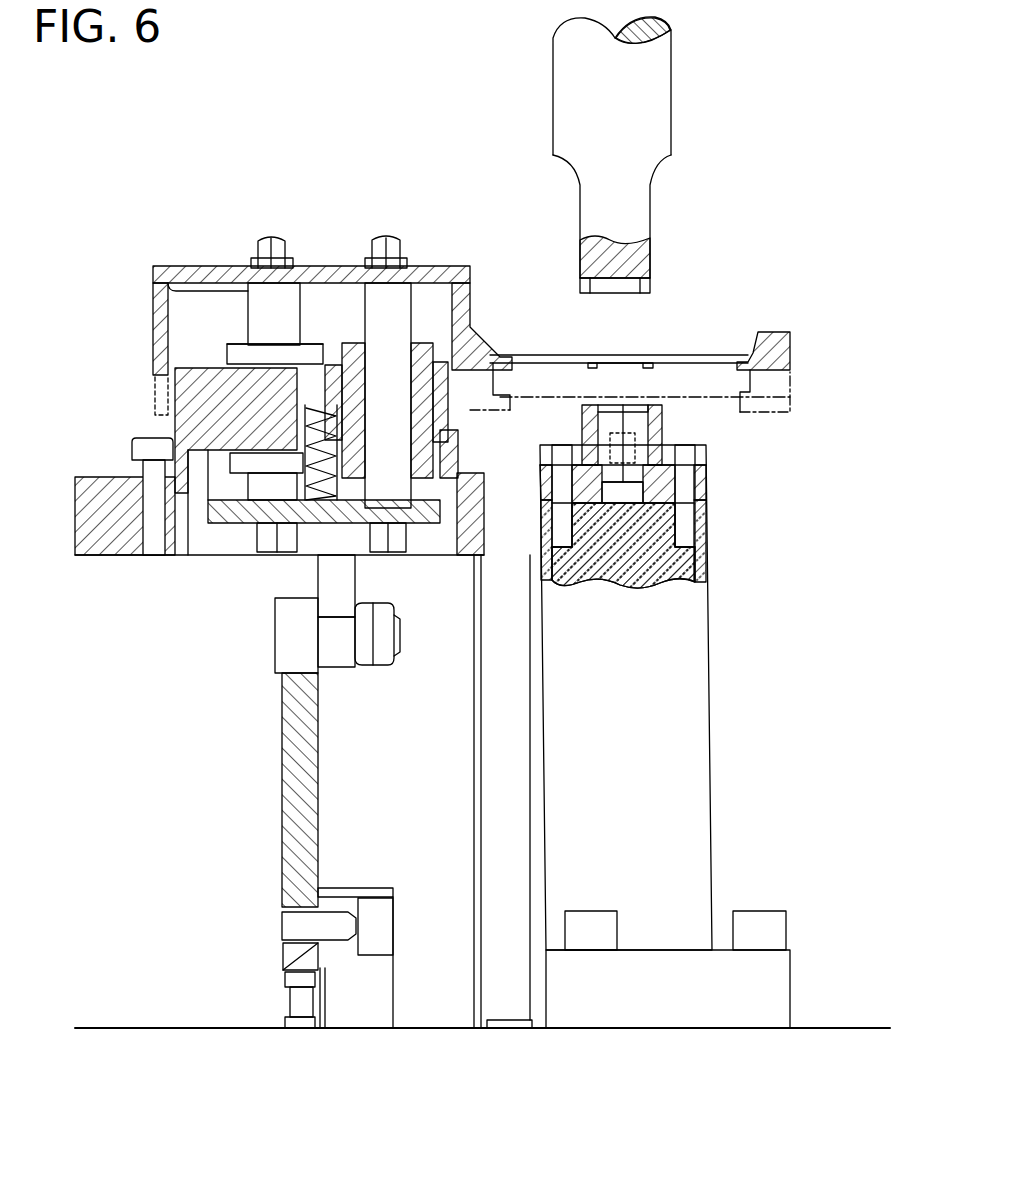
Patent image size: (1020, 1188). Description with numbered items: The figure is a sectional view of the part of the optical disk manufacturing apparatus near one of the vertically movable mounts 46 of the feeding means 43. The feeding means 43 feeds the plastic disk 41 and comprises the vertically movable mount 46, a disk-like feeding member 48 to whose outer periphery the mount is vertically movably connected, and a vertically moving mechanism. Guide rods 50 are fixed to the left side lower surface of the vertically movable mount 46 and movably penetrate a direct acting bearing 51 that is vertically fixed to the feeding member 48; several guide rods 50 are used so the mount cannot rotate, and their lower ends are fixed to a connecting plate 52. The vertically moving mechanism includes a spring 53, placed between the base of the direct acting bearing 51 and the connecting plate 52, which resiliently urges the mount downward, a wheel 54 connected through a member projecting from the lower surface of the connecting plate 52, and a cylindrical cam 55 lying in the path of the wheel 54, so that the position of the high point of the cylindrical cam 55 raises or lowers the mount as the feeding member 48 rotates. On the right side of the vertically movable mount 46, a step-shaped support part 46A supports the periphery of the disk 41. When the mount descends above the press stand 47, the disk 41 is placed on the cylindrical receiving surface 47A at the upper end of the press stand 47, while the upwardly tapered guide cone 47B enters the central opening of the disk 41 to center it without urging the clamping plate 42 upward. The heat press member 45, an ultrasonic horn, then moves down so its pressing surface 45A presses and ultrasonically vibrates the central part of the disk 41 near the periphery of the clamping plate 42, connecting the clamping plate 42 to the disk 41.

The plastic disk 41 is at (680, 356).
The clamping plate 42 is at (612, 358).
The feeding means 43 is at (115, 247).
The heat press member 45 is at (655, 122).
The pressing surface 45A is at (600, 290).
The vertically movable mount 46 is at (428, 280).
The support part 46A is at (506, 351).
The press stand 47 is at (695, 688).
The cylindrical receiving surface 47A is at (648, 388).
The guide cone 47B is at (628, 478).
The feeding member 48 is at (96, 542).
The guide rods 50 is at (255, 305).
The direct acting bearing 51 is at (242, 354).
The connecting plate 52 is at (225, 525).
The spring 53 is at (305, 433).
The wheel 54 is at (282, 640).
The cylindrical cam 55 is at (312, 834).